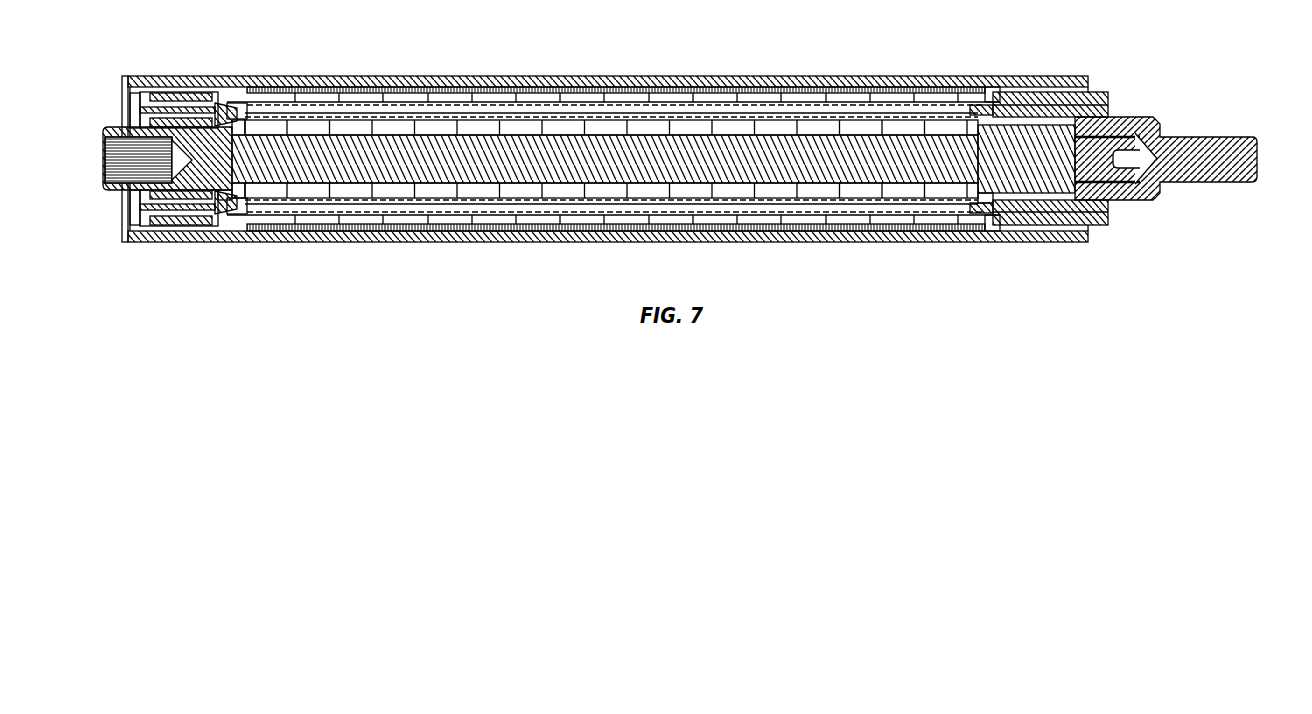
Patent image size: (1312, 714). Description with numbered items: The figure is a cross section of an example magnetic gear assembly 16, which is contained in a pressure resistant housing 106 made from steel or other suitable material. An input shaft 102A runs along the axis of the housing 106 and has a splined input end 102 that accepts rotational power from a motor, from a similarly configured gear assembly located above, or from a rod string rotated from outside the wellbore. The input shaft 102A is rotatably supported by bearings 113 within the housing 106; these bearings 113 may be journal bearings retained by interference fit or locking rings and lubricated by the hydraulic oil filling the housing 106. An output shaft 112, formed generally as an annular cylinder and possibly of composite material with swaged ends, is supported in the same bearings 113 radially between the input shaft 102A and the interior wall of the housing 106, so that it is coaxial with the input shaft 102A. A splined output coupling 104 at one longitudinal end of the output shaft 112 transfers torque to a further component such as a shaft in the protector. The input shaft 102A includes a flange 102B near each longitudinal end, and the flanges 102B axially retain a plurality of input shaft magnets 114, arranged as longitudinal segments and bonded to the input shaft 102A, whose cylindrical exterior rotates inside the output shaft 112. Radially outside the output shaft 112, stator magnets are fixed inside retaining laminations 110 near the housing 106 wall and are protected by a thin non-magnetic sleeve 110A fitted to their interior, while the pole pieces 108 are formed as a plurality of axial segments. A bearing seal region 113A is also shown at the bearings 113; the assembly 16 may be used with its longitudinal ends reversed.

The magnetic gear assembly 16 is at (560, 42).
The splined input end 102 is at (110, 192).
The input shaft 102A is at (895, 170).
The flange 102B is at (226, 195).
The splined output coupling 104 is at (1190, 178).
The pressure resistant housing 106 is at (343, 237).
The pole pieces 108 is at (668, 225).
The retaining laminations 110 is at (813, 92).
The non-magnetic sleeve 110A is at (444, 105).
The output shaft 112 is at (885, 110).
The bearings 113 is at (163, 128).
The seal 113A is at (210, 110).
The input shaft magnets 114 is at (557, 192).